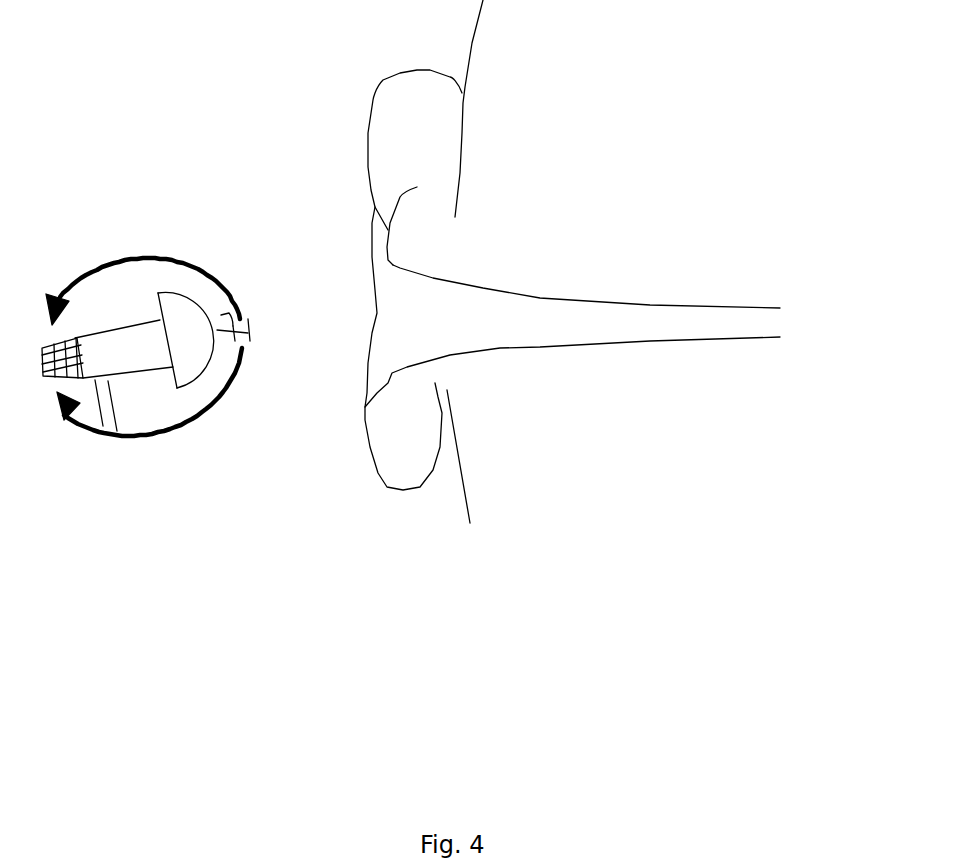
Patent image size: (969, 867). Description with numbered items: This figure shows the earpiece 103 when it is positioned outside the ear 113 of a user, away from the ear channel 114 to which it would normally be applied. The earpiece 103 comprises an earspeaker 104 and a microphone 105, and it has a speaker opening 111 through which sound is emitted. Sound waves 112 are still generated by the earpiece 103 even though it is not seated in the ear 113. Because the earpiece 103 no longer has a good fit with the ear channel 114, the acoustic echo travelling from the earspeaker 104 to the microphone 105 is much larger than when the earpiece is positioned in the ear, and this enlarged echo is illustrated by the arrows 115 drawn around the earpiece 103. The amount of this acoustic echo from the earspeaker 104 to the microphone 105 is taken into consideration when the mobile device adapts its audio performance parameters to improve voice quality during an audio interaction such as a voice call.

The earpiece 103 is at (184, 279).
The earspeaker 104 is at (183, 300).
The microphone 105 is at (57, 380).
The speaker opening 111 is at (250, 332).
The sound waves 112 is at (247, 317).
The ear 113 is at (440, 156).
The ear channel 114 is at (584, 314).
The arrows 115 is at (157, 258).